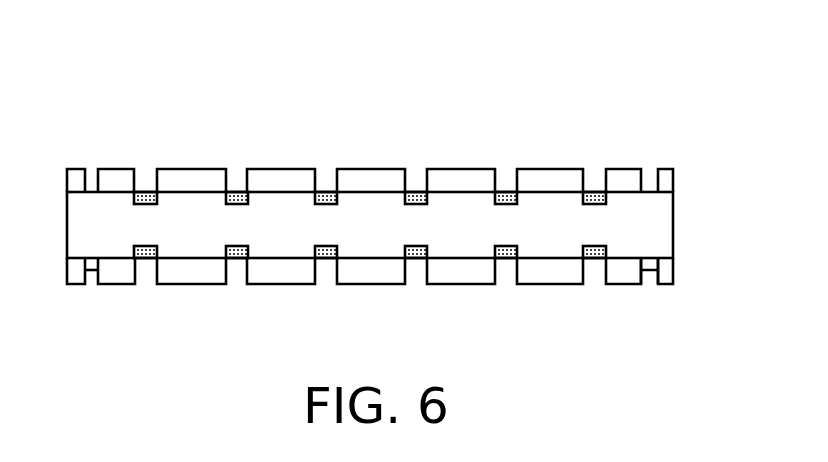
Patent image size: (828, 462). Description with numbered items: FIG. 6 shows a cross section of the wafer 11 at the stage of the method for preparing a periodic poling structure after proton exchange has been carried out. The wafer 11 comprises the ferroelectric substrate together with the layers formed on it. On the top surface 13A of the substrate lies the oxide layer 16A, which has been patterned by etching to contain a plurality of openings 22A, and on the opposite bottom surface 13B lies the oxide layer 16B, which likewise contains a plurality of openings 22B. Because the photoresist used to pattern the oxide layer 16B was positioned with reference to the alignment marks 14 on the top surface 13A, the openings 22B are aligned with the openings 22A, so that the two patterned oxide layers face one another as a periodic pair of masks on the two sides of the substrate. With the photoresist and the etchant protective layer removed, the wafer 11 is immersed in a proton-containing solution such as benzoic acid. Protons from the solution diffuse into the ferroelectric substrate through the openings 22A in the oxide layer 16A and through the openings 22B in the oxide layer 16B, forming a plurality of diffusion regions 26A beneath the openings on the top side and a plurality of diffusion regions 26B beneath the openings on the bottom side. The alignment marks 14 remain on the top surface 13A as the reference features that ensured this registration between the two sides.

The wafer 11 is at (122, 120).
The top surface 13A is at (236, 264).
The bottom surface 13B is at (323, 188).
The oxide layer 16A is at (380, 272).
The oxide layer 16B is at (380, 184).
The diffusion region 26A is at (505, 262).
The diffusion region 26B is at (506, 190).
The opening 22A is at (597, 264).
The opening 22B is at (596, 190).
The alignment mark 14 is at (649, 270).